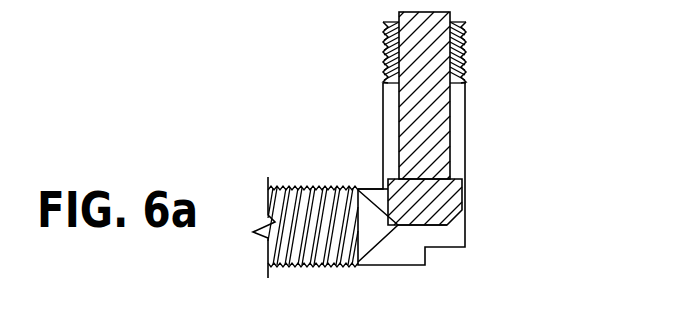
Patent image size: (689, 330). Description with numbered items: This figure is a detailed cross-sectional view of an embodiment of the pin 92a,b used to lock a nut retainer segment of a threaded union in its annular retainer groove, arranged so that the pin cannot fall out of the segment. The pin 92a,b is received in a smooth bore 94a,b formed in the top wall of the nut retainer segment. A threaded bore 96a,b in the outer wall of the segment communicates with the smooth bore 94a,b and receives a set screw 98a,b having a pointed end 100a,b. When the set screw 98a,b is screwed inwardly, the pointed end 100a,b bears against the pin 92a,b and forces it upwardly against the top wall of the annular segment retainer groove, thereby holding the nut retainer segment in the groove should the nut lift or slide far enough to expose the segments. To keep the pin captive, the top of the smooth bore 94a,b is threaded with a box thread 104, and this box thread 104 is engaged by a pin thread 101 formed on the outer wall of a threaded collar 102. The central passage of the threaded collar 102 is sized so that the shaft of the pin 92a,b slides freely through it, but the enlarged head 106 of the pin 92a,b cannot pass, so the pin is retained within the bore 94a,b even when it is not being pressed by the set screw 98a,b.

The cylindrical pin 92a,b is at (430, 105).
The smooth bore 94a,b is at (466, 161).
The threaded bore 96a,b is at (283, 186).
The set screw 98a,b is at (285, 207).
The pointed end 100a,b is at (368, 188).
The pin thread 101 is at (467, 50).
The threaded collar 102 is at (382, 30).
The box thread 104 is at (382, 62).
The head 106 is at (442, 225).